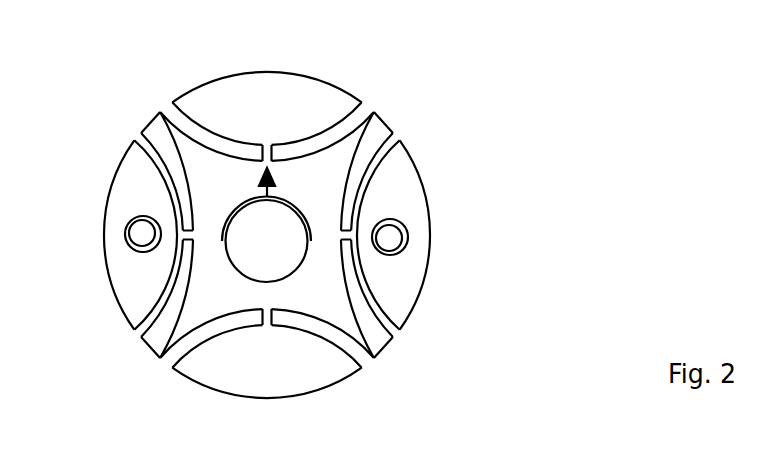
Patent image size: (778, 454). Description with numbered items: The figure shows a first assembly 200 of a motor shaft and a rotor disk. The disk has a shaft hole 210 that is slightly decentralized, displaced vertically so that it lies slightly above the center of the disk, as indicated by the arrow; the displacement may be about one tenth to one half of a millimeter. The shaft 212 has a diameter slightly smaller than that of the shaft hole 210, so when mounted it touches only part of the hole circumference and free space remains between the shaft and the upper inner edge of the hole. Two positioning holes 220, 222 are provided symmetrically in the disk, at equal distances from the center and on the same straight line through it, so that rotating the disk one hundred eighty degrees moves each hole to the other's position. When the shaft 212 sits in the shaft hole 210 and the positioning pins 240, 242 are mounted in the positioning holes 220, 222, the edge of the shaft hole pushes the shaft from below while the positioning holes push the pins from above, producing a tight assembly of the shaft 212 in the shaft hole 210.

The stator/magnet assembly 200 is at (207, 78).
The shaft hole 210 is at (223, 236).
The shaft 212 is at (290, 253).
The positioning hole 220 is at (126, 238).
The positioning hole 222 is at (409, 240).
The positioning pin 240 is at (150, 227).
The positioning pin 242 is at (387, 235).